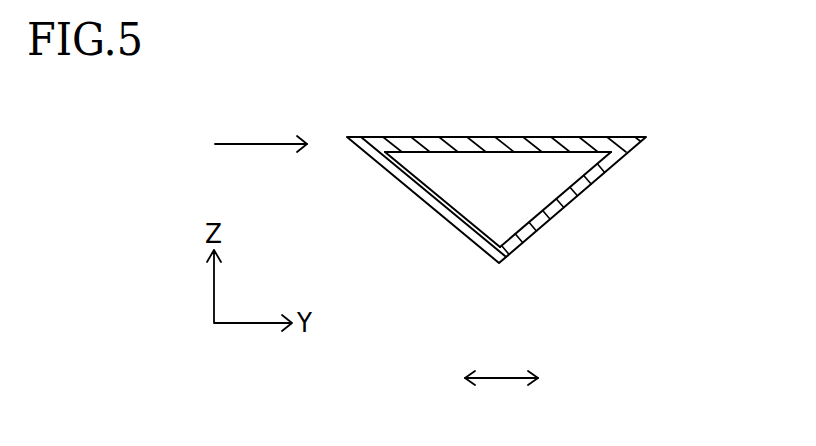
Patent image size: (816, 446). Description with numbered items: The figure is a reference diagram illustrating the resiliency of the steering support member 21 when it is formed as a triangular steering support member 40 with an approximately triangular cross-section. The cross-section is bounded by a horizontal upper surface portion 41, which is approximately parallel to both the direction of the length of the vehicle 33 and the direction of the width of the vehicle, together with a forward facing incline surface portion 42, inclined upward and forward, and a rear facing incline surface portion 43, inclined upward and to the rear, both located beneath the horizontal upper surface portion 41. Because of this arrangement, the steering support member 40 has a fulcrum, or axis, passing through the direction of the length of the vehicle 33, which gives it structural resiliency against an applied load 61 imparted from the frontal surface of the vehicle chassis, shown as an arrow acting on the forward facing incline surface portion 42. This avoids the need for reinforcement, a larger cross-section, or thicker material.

The steering support member 21 is at (496, 160).
The triangular steering support member 40 is at (496, 172).
The horizontal upper surface portion 41 is at (437, 137).
The forward facing incline surface portion 42 is at (440, 213).
The rear facing incline surface portion 43 is at (563, 206).
The applied load 61 is at (260, 144).
The direction of the length of the vehicle 33 is at (505, 378).